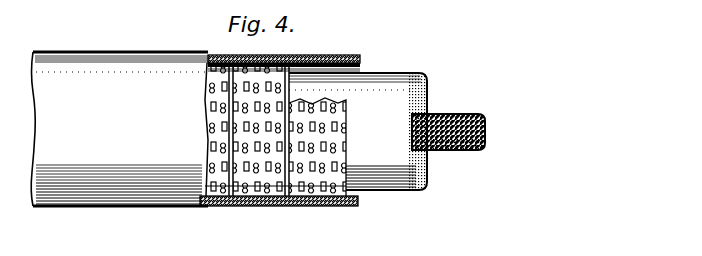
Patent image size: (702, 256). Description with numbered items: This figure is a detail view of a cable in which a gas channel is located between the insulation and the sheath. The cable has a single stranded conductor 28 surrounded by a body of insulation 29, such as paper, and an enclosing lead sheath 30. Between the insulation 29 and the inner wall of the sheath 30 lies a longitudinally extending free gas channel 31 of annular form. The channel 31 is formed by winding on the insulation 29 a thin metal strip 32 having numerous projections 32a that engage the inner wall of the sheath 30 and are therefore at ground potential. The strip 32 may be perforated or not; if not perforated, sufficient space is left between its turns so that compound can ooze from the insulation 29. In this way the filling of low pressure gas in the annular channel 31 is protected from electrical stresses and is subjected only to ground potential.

The stranded conductor 28 is at (474, 113).
The body of insulation 29 is at (405, 188).
The lead sheath 30 is at (165, 198).
The free gas channel 31 is at (331, 58).
The thin metal strip 32 is at (270, 200).
The projections 32a is at (238, 198).